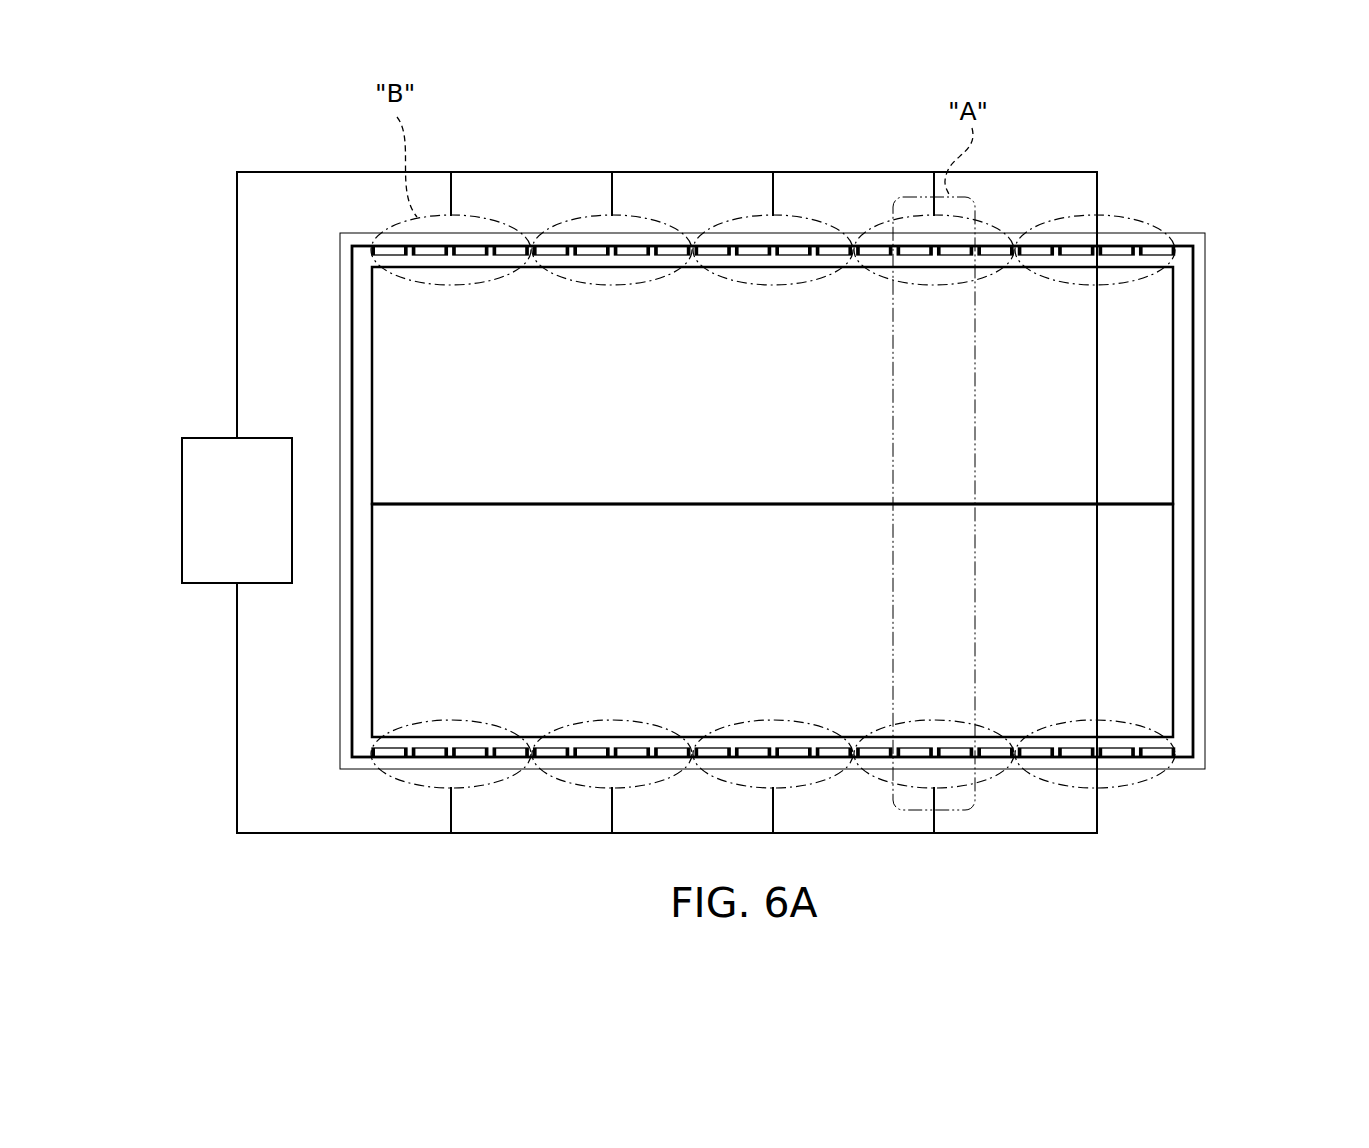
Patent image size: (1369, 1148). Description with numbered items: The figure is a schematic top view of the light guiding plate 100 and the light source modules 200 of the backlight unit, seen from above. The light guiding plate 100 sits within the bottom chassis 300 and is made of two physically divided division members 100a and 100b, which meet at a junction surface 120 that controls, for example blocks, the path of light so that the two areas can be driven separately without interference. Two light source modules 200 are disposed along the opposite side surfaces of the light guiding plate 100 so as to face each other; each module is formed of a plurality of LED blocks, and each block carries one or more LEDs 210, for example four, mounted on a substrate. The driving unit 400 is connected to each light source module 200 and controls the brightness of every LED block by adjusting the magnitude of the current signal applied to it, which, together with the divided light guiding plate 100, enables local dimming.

The light guiding plate 100 is at (1177, 375).
The division member 100a is at (1165, 308).
The division member 100b is at (1162, 652).
The junction surface 120 is at (1142, 503).
The light source module 200 is at (372, 250).
The LED 210 is at (672, 250).
The bottom chassis 300 is at (1205, 584).
The driving unit 400 is at (193, 495).